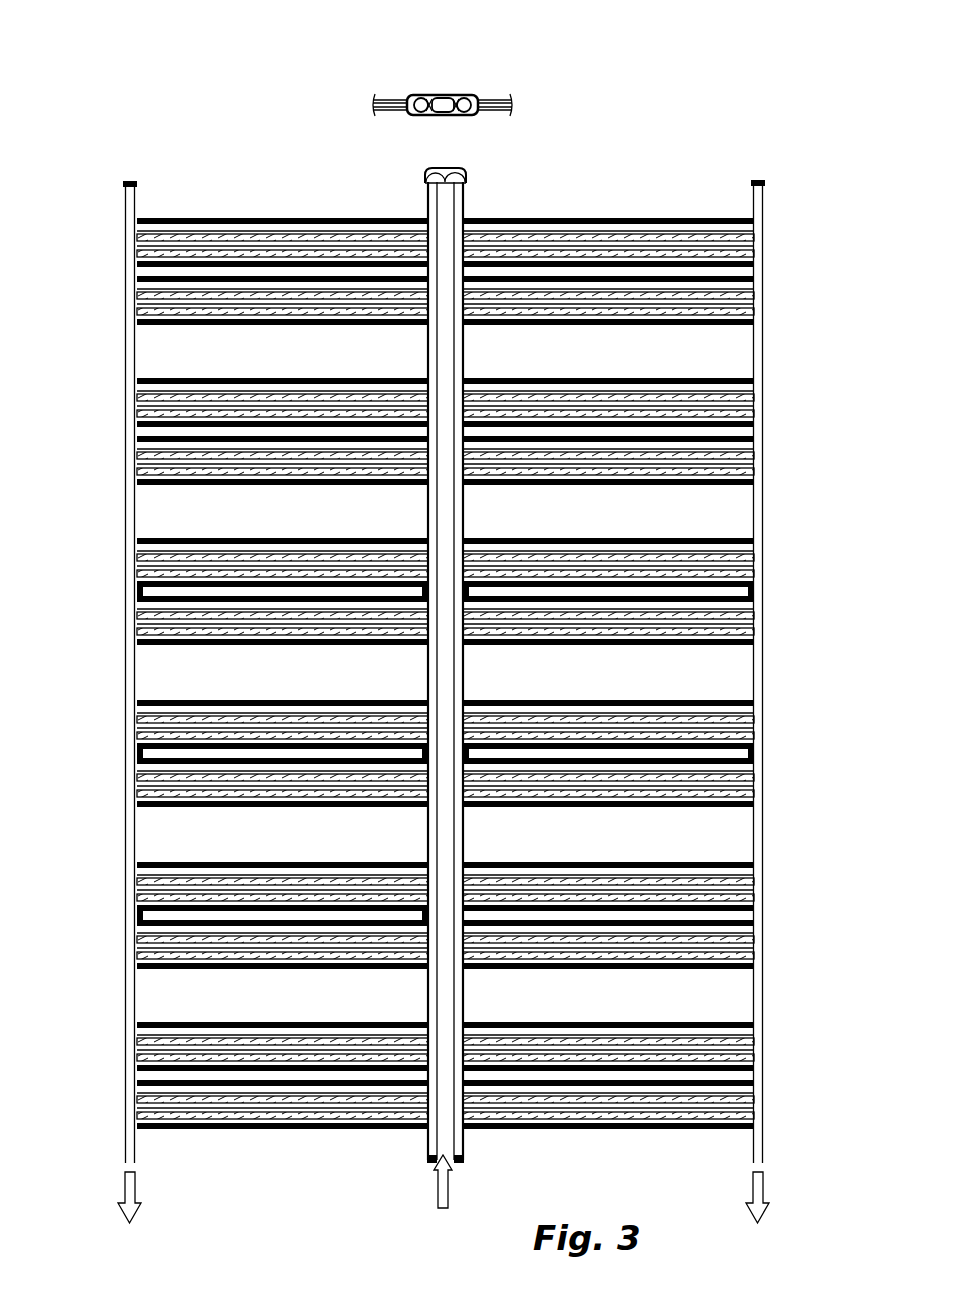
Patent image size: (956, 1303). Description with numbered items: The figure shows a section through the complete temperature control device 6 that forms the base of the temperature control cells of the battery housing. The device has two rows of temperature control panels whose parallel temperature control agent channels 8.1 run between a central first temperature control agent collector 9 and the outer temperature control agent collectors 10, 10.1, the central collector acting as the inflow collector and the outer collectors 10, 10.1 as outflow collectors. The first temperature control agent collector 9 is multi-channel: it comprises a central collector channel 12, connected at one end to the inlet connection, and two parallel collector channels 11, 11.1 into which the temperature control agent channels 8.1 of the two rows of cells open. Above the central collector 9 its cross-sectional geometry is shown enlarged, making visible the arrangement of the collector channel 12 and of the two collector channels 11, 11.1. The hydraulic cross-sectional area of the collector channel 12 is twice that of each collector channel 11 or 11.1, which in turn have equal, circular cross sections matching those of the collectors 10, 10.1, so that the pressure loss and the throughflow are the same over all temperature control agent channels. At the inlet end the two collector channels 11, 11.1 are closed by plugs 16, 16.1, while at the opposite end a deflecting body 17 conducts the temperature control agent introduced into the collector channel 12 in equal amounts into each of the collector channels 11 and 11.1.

The temperature control device 6 is at (438, 616).
The temperature control agent channels 8.1 is at (213, 297).
The first temperature control agent collector 9 is at (456, 608).
The second temperature control agent collector 10 is at (763, 358).
The temperature control agent collector 10.1 is at (125, 348).
The collector channel 11 is at (476, 95).
The collector channel 11.1 is at (413, 93).
The collector channel 12 is at (436, 94).
The plug 16 is at (463, 1165).
The plug 16.1 is at (428, 1165).
The deflecting body 17 is at (428, 168).